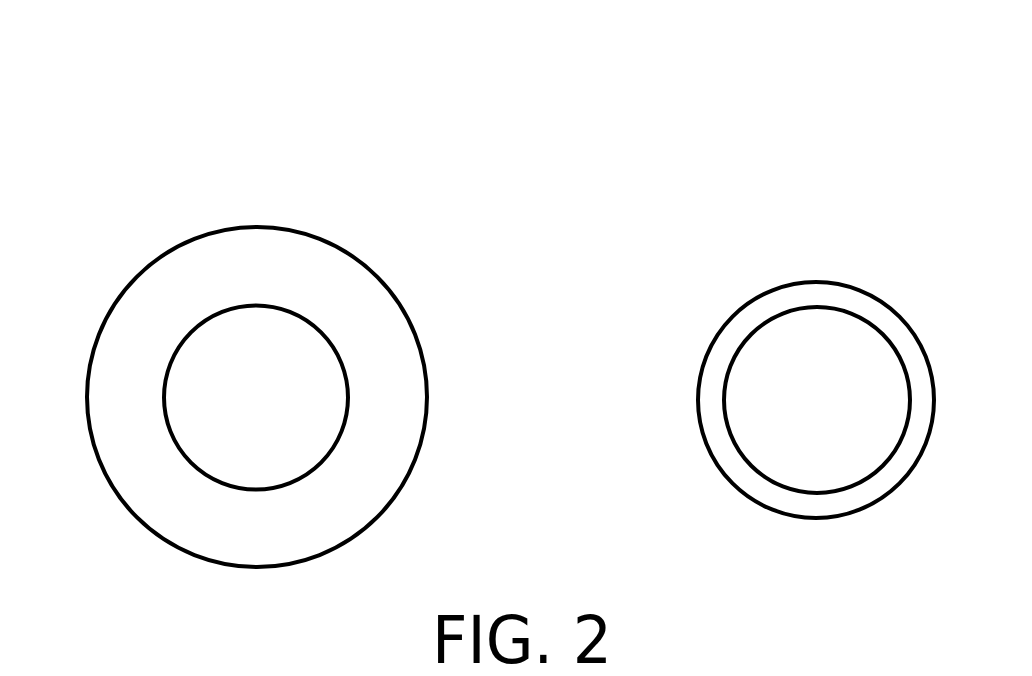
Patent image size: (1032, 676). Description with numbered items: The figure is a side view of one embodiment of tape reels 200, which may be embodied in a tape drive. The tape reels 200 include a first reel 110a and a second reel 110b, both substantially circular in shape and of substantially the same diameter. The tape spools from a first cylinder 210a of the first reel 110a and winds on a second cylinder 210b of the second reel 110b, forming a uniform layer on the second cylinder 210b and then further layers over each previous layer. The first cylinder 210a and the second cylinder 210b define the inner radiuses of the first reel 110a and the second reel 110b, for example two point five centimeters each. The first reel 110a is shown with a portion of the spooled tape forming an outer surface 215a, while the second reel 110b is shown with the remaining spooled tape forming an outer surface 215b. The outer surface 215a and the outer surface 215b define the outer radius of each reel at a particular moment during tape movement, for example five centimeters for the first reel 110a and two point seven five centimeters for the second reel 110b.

The tape reels 200 is at (99, 75).
The outer surface of the first reel 215a is at (320, 236).
The first cylinder 210a is at (212, 315).
The first reel 110a is at (218, 434).
The outer surface of the second reel 215b is at (832, 282).
The second cylinder 210b is at (745, 335).
The second reel 110b is at (782, 452).